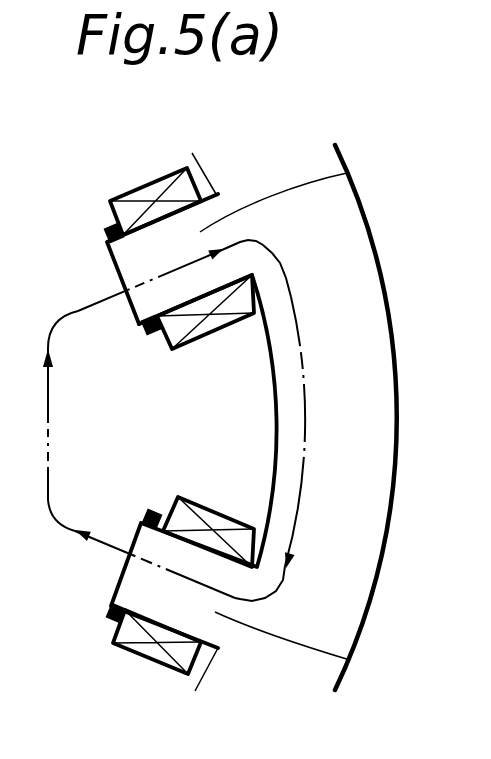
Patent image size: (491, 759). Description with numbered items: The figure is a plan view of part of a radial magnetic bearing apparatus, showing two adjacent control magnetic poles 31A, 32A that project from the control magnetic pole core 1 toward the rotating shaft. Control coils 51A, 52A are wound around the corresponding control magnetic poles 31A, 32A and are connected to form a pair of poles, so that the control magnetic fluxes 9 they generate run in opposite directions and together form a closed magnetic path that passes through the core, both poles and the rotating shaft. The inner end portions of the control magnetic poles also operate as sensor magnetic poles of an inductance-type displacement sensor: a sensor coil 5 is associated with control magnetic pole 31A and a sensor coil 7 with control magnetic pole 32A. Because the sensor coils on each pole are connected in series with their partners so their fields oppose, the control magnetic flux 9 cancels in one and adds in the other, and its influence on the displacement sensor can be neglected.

The control magnetic pole core 1 is at (350, 250).
The sensor coil 5 is at (107, 233).
The sensor coil 7 is at (110, 610).
The control magnetic flux 9 is at (292, 536).
The control magnetic pole 31A is at (347, 173).
The control magnetic pole 32A is at (350, 660).
The control coil 51A is at (228, 315).
The control coil 52A is at (228, 513).